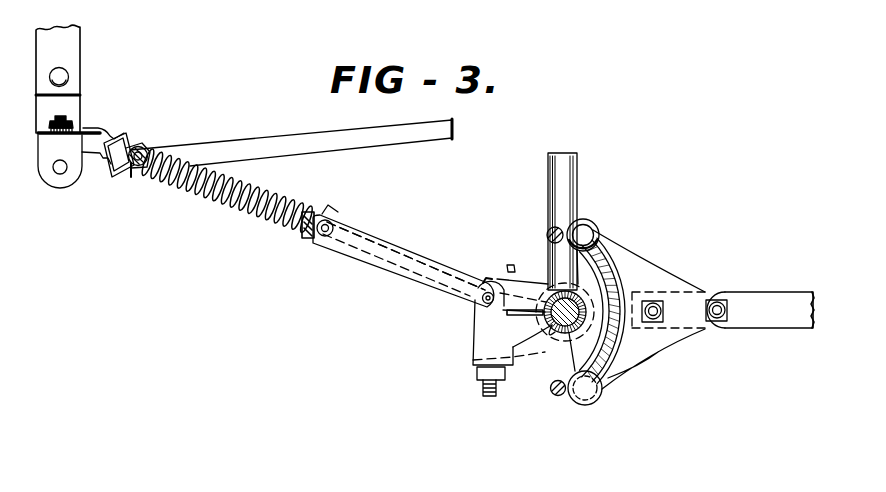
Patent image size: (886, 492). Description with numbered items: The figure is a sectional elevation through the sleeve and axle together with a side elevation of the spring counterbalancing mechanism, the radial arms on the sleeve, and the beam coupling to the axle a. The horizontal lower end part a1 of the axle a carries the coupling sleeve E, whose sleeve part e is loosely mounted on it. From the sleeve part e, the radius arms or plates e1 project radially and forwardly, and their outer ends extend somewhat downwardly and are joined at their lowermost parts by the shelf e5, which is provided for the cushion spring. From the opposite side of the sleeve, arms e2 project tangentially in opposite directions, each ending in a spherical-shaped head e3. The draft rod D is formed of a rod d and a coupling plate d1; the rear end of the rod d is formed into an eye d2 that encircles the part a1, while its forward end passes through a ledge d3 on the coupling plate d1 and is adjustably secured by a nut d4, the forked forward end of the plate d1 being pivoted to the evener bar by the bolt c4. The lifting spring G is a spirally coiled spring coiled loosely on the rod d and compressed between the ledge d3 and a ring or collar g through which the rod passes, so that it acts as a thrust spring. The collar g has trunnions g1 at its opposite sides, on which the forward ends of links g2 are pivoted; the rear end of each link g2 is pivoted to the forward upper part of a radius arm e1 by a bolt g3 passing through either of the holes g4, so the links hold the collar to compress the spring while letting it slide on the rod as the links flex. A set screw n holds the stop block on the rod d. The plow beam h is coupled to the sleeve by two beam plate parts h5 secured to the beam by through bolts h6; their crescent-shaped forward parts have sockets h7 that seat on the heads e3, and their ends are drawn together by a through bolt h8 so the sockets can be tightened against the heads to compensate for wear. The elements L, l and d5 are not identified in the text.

The bolt c4 is at (68, 119).
The coupling plate d1 is at (100, 141).
The ledge d3 is at (141, 150).
The nut d4 is at (114, 160).
The coupling pin d5 is at (146, 153).
The pin l is at (131, 179).
The bar L is at (385, 140).
The lifting spring G is at (238, 212).
The rod d is at (312, 212).
The draft rod D is at (388, 250).
The ring or collar g is at (333, 214).
The trunnions g1 is at (320, 236).
The links g2 is at (398, 244).
The bolt g3 is at (481, 301).
The holes g4 is at (479, 297).
The radius arms or plates e1 is at (489, 322).
The coupling sleeve E is at (512, 345).
The sleeve part e is at (548, 336).
The shelf e5 is at (476, 362).
The eye d2 is at (538, 283).
The set screw n is at (510, 265).
The lower part of the axle a1 is at (540, 316).
The axle a is at (548, 181).
The arms e2 is at (626, 270).
The spherical-shaped head e3 is at (597, 228).
The through bolt h8 is at (547, 233).
The semi-spherical depressions or sockets h7 is at (585, 221).
The beam coupling plate parts h5 is at (680, 280).
The plow beam h is at (758, 296).
The through bolts h6 is at (664, 311).